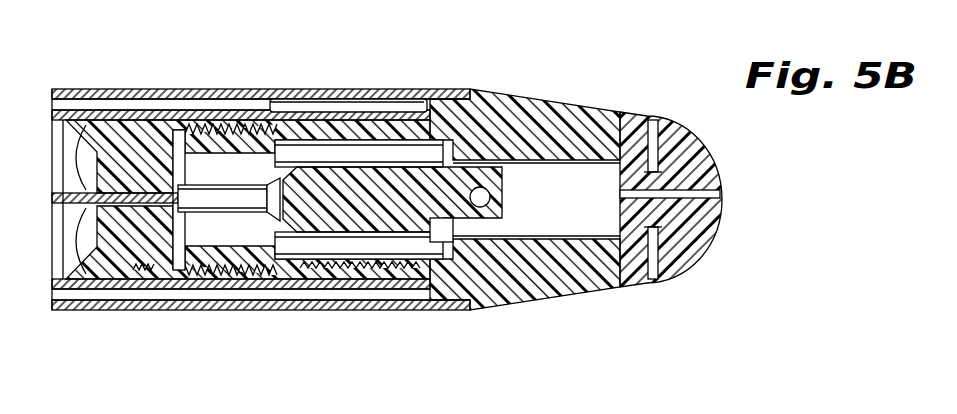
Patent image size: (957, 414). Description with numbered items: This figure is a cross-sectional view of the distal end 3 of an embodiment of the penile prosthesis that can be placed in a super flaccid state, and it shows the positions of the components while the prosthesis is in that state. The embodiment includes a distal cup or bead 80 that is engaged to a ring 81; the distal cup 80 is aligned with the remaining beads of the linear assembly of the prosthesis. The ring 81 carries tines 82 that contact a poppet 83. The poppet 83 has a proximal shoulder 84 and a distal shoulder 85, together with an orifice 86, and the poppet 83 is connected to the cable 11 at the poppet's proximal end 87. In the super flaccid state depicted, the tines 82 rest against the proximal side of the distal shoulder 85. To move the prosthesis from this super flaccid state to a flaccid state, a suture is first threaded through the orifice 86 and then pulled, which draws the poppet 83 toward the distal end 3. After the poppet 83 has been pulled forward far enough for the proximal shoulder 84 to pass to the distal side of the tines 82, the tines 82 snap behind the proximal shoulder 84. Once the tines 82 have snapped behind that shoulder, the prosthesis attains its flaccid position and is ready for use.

The distal end 3 is at (556, 97).
The cable 11 is at (160, 222).
The distal cup or bead 80 is at (128, 165).
The ring 81 is at (163, 140).
The tines 82 is at (350, 146).
The poppet 83 is at (377, 203).
The proximal shoulder 84 is at (305, 240).
The distal shoulder 85 is at (455, 225).
The orifice 86 is at (481, 200).
The proximal end 87 is at (217, 205).